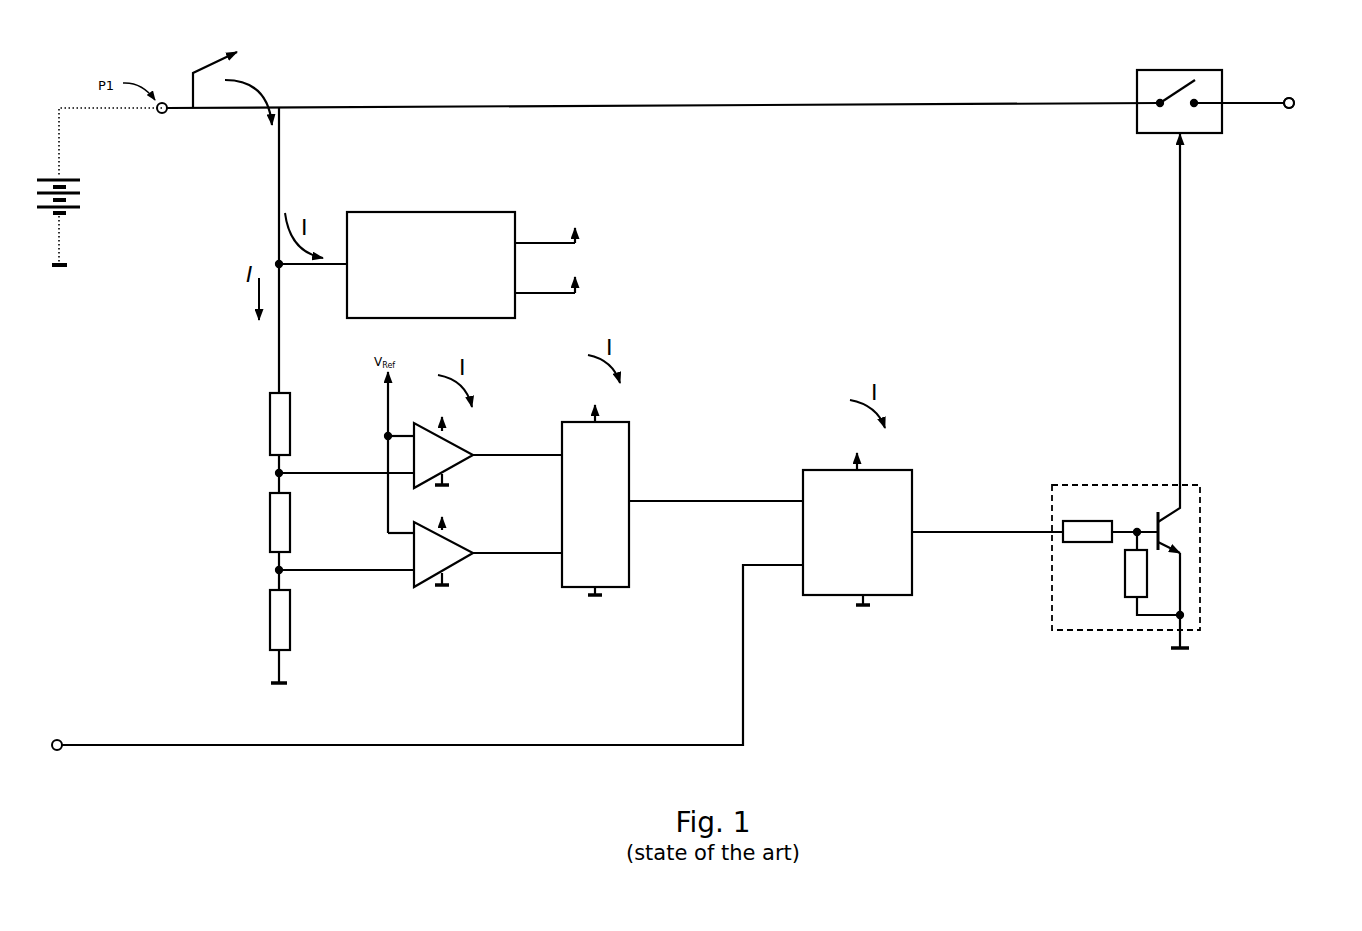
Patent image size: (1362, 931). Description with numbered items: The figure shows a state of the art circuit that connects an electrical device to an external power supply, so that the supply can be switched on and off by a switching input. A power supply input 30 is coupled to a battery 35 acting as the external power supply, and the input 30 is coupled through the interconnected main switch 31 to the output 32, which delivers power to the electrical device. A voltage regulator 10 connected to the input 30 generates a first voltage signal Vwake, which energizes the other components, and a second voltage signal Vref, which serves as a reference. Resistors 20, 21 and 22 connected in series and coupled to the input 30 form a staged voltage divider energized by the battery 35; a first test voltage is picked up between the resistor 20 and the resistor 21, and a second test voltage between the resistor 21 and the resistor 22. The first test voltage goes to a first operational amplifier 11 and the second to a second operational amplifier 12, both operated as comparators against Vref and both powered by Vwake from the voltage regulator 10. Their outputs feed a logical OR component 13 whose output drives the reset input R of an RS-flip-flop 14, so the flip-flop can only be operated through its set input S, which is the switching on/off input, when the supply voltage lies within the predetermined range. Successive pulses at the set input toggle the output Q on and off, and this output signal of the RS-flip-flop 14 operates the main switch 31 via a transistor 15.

The voltage regulator 10 is at (442, 203).
The first operational amplifier 11 is at (463, 440).
The second operational amplifier 12 is at (463, 540).
The logical OR component 13 is at (637, 455).
The RS-flip-flop 14 is at (915, 465).
The transistor 15 is at (1207, 477).
The resistor 20 is at (266, 390).
The resistor 21 is at (266, 488).
The resistor 22 is at (266, 585).
The power supply input 30 is at (235, 83).
The main switch 31 is at (1228, 63).
The output 32 is at (1300, 88).
The battery 35 is at (83, 217).